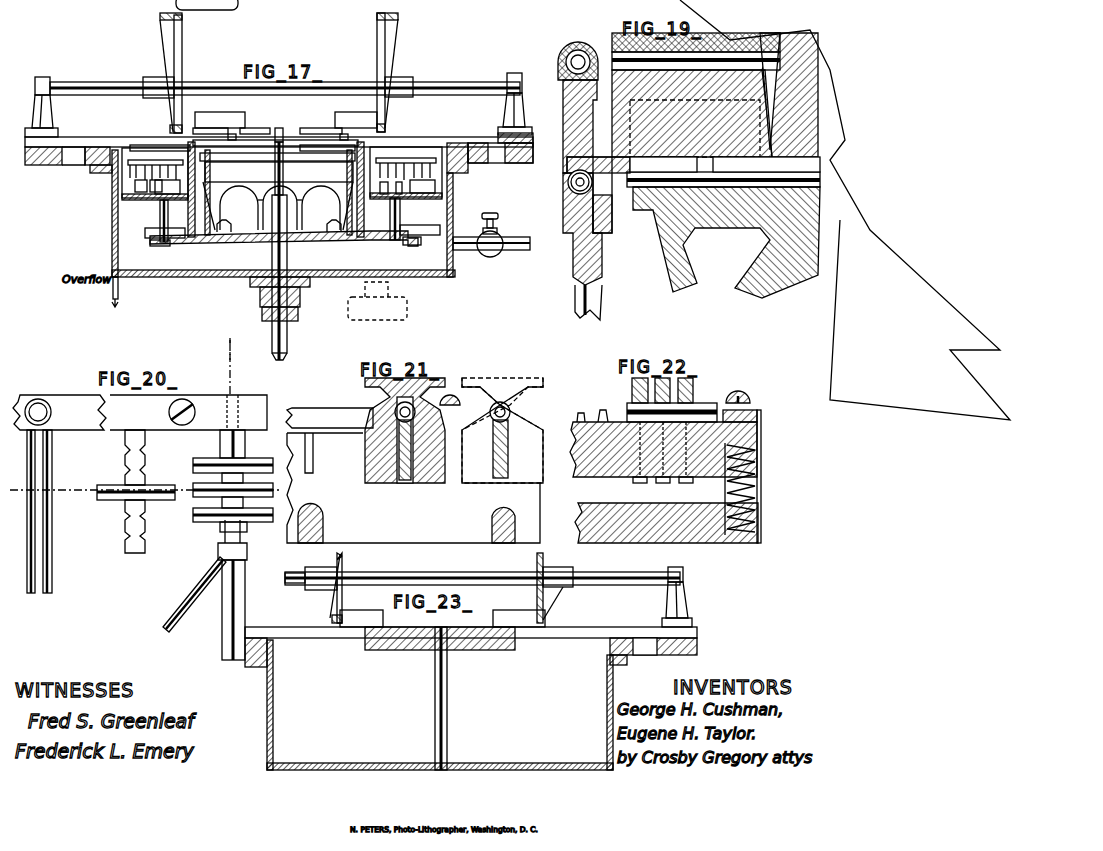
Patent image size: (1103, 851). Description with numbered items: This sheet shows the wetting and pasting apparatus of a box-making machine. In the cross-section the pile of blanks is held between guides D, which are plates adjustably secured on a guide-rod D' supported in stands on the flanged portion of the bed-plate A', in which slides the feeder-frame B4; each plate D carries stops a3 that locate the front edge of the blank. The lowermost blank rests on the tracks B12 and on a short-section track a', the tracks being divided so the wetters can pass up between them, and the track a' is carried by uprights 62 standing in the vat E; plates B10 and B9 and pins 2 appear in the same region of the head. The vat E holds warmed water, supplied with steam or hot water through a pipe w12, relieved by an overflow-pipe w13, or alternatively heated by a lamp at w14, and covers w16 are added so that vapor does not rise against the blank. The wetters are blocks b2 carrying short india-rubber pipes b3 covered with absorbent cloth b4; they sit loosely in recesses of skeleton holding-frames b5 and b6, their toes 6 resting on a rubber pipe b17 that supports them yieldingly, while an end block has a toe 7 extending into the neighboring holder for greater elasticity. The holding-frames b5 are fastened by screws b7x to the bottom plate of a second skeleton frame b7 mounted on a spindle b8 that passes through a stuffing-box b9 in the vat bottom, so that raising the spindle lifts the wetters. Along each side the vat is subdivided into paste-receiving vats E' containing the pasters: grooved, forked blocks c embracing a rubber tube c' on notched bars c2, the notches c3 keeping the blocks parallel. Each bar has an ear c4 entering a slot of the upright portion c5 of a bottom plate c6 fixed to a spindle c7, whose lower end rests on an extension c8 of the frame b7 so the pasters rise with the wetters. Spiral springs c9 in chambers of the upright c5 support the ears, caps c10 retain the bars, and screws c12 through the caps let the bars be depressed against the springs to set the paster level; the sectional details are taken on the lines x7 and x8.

In FIG. 17, the guide D is at (278, 73).
In FIG. 23, the guide D is at (430, 588).
In FIG. 17, the guide-rod D' is at (285, 78).
In FIG. 23, the guide-rod D' is at (482, 586).
In FIG. 17, the feeder-frame B4 is at (90, 140).
In FIG. 23, the feeder-frame B4 is at (310, 640).
In FIG. 17, the bed-plate A' is at (269, 165).
In FIG. 23, the bed-plate A' is at (665, 650).
In FIG. 17, the tracks B12 is at (261, 143).
In FIG. 17, the stops a3 is at (210, 120).
In FIG. 23, the stops a3 is at (362, 612).
In FIG. 17, the plate B10 is at (228, 128).
In FIG. 17, the plate B9 is at (292, 130).
In FIG. 17, the pin 2 is at (288, 128).
In FIG. 17, the short-section track a' is at (282, 127).
In FIG. 23, the short-section track a' is at (440, 630).
In FIG. 17, the vat E is at (283, 224).
In FIG. 23, the vat E is at (440, 705).
In FIG. 17, the paste-receiving vat E' is at (292, 222).
In FIG. 17, the holding-frame b5 is at (328, 192).
In FIG. 19, the holding-frame b5 is at (730, 215).
In FIG. 17, the screws b7x is at (226, 224).
In FIG. 17, the skeleton frame b7 is at (216, 245).
In FIG. 17, the spindle b8 is at (275, 262).
In FIG. 17, the stuffing-box b9 is at (284, 299).
In FIG. 17, the upright portion c5 is at (282, 173).
In FIG. 20, the upright portion c5 is at (70, 398).
In FIG. 21, the upright portion c5 is at (530, 497).
In FIG. 22, the upright portion c5 is at (761, 480).
In FIG. 17, the blocks c is at (282, 162).
In FIG. 20, the blocks c is at (185, 481).
In FIG. 21, the blocks c is at (404, 430).
In FIG. 22, the blocks c is at (663, 435).
In FIG. 17, the bottom plate c6 is at (287, 172).
In FIG. 20, the bottom plate c6 is at (52, 520).
In FIG. 21, the bottom plate c6 is at (322, 518).
In FIG. 22, the bottom plate c6 is at (686, 504).
In FIG. 17, the caps c10 is at (282, 170).
In FIG. 20, the caps c10 is at (250, 398).
In FIG. 21, the caps c10 is at (338, 412).
In FIG. 22, the caps c10 is at (756, 412).
In FIG. 17, the bars c2 is at (284, 171).
In FIG. 20, the bars c2 is at (143, 532).
In FIG. 21, the bars c2 is at (405, 482).
In FIG. 22, the bars c2 is at (574, 448).
In FIG. 17, the spindle c7 is at (160, 220).
In FIG. 17, the extension c8 is at (284, 240).
In FIG. 17, the overflow-pipe w13 is at (112, 238).
In FIG. 17, the pipe w12 is at (492, 248).
In FIG. 17, the lamp w14 is at (377, 301).
In FIG. 17, the section line x8 is at (228, 340).
In FIG. 19, the absorbent material b4 is at (582, 42).
In FIG. 19, the india-rubber pipe b3 is at (572, 48).
In FIG. 19, the blocks b2 is at (564, 96).
In FIG. 19, the toe 7 is at (598, 158).
In FIG. 19, the india-rubber pipe b17 is at (765, 160).
In FIG. 19, the holding-frame b6 is at (572, 216).
In FIG. 19, the toes 6 is at (695, 165).
In FIG. 20, the spiral springs c9 is at (40, 398).
In FIG. 22, the spiral springs c9 is at (757, 456).
In FIG. 20, the screws c12 is at (194, 410).
In FIG. 21, the screws c12 is at (452, 392).
In FIG. 22, the screws c12 is at (742, 394).
In FIG. 20, the section line x7 is at (145, 482).
In FIG. 20, the notches c3 is at (126, 515).
In FIG. 21, the notches c3 is at (490, 412).
In FIG. 22, the notches c3 is at (603, 410).
In FIG. 20, the rubber tube c' is at (197, 481).
In FIG. 21, the rubber tube c' is at (496, 422).
In FIG. 22, the rubber tube c' is at (677, 401).
In FIG. 22, the ear c4 is at (758, 424).
In FIG. 23, the covers w16 is at (390, 650).
In FIG. 23, the uprights 62 is at (447, 712).